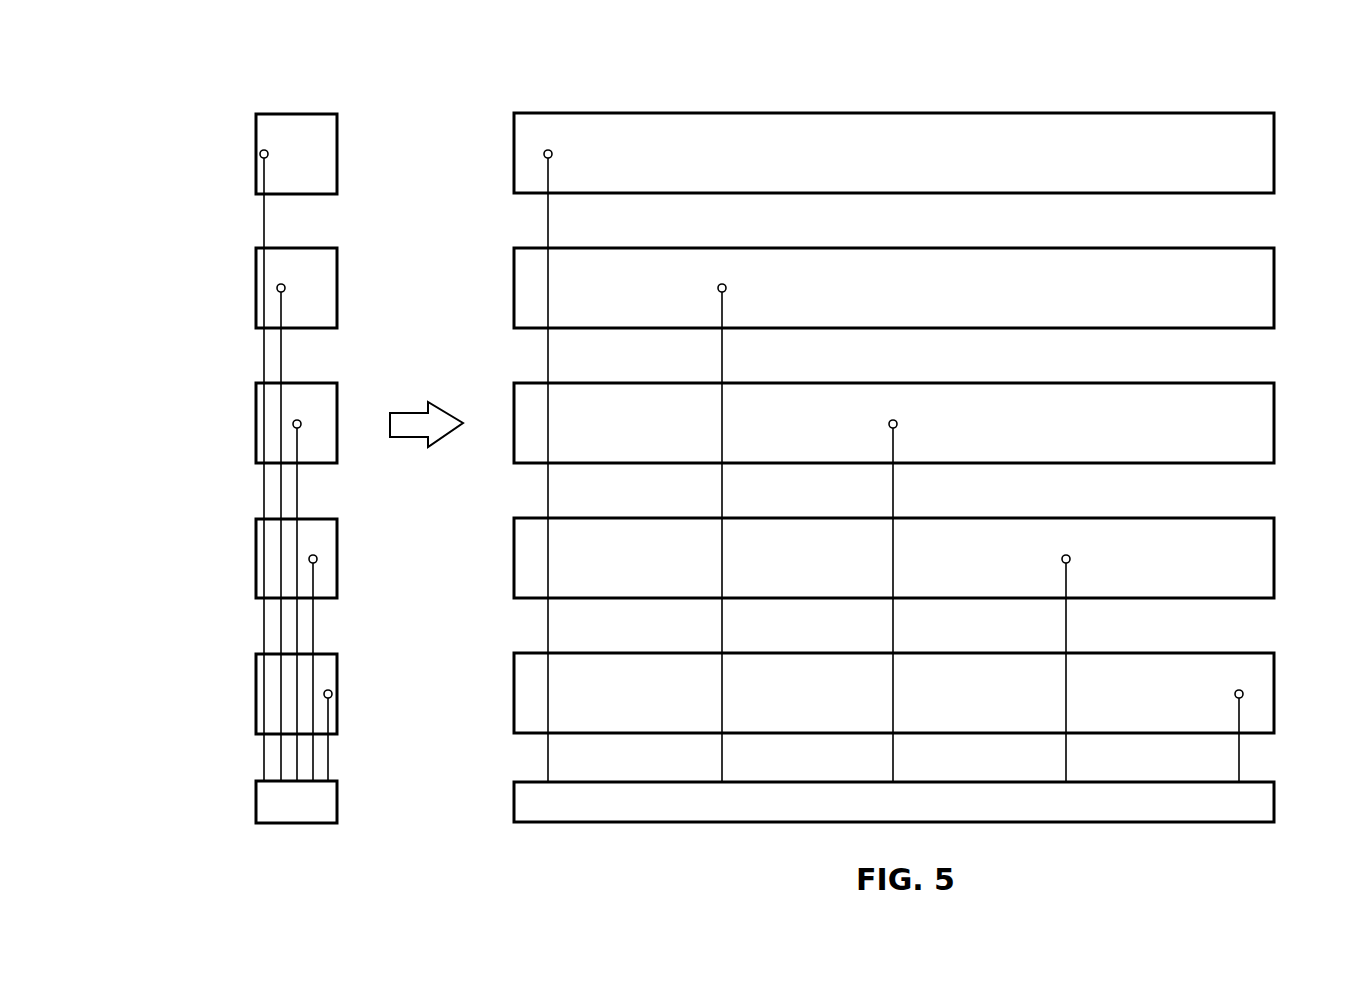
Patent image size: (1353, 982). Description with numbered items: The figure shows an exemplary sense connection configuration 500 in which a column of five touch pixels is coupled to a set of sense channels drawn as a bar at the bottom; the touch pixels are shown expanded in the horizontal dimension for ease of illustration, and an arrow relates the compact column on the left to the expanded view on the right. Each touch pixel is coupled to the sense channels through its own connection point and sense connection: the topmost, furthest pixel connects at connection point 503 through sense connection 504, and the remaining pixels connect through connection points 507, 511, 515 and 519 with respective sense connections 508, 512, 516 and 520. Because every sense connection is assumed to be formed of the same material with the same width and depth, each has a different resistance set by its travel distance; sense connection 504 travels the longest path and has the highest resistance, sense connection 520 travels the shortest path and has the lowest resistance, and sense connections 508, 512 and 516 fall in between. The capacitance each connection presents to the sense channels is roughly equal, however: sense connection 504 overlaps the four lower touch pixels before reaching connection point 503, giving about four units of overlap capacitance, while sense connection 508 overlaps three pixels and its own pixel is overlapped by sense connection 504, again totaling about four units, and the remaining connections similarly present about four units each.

The sense connection configuration 500 is at (205, 82).
The connection point 503 is at (551, 151).
The sense connection 504 is at (546, 230).
The connection point 507 is at (725, 285).
The sense connection 508 is at (720, 366).
The connection point 511 is at (896, 421).
The sense connection 512 is at (891, 500).
The connection point 515 is at (1069, 556).
The sense connection 516 is at (1064, 640).
The connection point 519 is at (1236, 692).
The sense connection 520 is at (1237, 774).